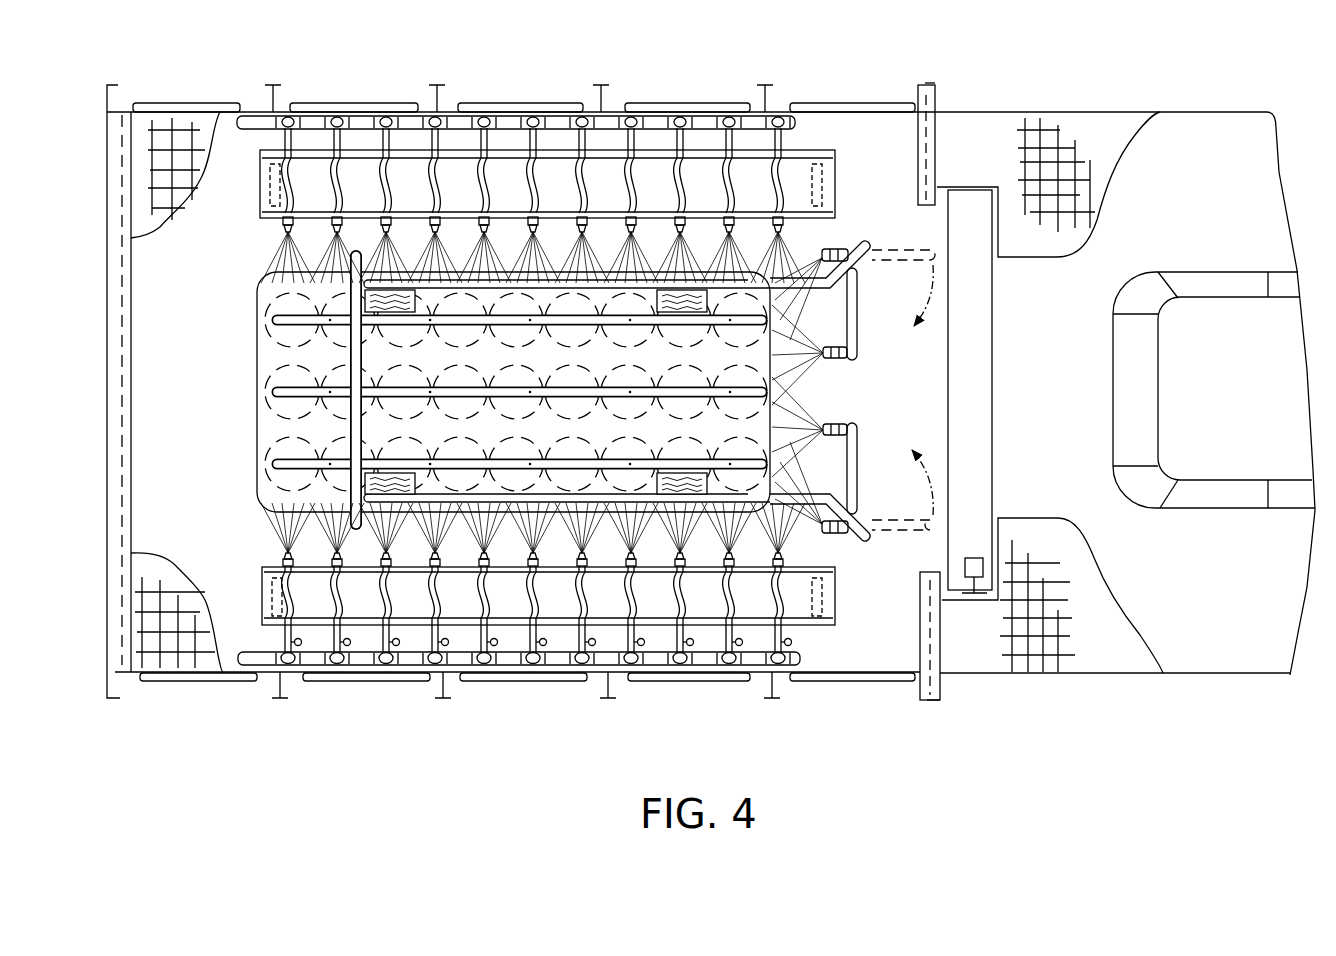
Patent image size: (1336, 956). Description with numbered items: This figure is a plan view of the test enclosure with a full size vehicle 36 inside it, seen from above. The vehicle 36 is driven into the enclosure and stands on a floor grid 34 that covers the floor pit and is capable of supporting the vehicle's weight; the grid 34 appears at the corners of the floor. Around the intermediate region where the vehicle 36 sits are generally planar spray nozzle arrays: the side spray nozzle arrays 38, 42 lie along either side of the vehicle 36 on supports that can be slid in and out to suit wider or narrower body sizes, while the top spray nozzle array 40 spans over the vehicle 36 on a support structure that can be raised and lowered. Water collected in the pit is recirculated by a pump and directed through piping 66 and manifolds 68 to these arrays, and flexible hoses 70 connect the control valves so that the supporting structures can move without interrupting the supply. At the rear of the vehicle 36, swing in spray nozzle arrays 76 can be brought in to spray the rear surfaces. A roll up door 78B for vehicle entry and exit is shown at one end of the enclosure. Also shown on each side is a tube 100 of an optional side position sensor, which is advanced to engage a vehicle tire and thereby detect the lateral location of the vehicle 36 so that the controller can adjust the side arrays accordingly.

The floor grid 34 is at (165, 147).
The vehicle 36 is at (263, 473).
The side spray nozzle array 38 is at (278, 550).
The top spray nozzle array 40 is at (307, 357).
The side spray nozzle array 42 is at (265, 245).
The piping 66 is at (350, 423).
The manifolds 68 is at (652, 113).
The flexible hoses 70 is at (387, 185).
The swing in spray nozzle arrays 76 is at (858, 343).
The roll up door 78B is at (982, 430).
The tube 100 is at (798, 277).